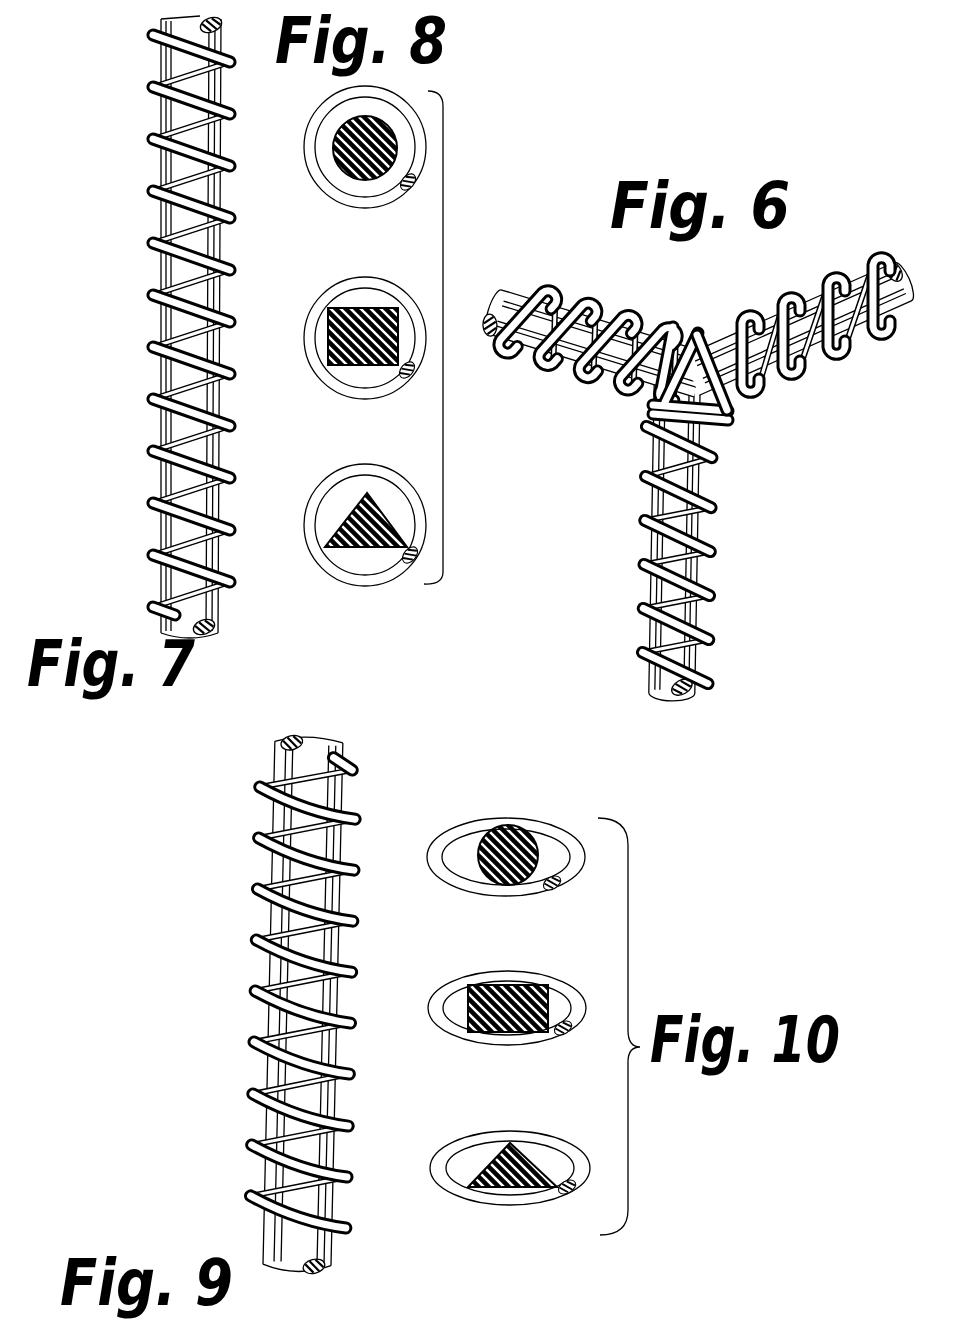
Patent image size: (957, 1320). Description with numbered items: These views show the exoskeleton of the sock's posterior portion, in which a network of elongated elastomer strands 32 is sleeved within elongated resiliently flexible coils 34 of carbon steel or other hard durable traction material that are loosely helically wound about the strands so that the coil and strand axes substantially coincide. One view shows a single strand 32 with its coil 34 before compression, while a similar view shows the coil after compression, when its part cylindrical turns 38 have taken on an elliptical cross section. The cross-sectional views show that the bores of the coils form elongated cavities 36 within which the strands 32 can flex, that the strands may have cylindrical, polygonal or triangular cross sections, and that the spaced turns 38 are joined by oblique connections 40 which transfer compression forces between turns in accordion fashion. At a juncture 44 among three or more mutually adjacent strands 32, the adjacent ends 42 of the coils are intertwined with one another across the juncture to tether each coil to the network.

In FIG. 7, the elongated strands 32 is at (162, 482).
In FIG. 6, the elongated strands 32 is at (700, 530).
In FIG. 9, the elongated strands 32 is at (272, 1117).
In FIG. 7, the elongated resiliently flexible coils 34 is at (148, 391).
In FIG. 6, the elongated resiliently flexible coils 34 is at (645, 520).
In FIG. 9, the elongated resiliently flexible coils 34 is at (260, 942).
In FIG. 8, the elongated cavities 36 is at (360, 298).
In FIG. 10, the elongated cavities 36 is at (465, 845).
In FIG. 8, the part cylindrical turns 38 is at (325, 183).
In FIG. 10, the part cylindrical turns 38 is at (550, 832).
In FIG. 8, the oblique connections 40 is at (412, 190).
In FIG. 10, the oblique connections 40 is at (555, 890).
In FIG. 6, the ends of the coils 42 is at (690, 330).
In FIG. 6, the juncture 44 is at (707, 325).